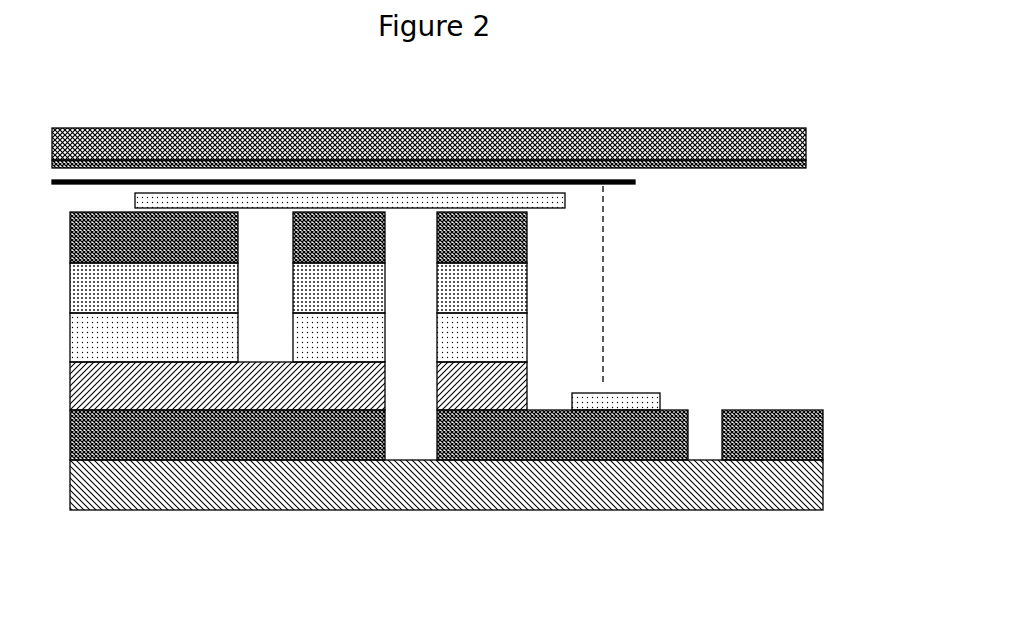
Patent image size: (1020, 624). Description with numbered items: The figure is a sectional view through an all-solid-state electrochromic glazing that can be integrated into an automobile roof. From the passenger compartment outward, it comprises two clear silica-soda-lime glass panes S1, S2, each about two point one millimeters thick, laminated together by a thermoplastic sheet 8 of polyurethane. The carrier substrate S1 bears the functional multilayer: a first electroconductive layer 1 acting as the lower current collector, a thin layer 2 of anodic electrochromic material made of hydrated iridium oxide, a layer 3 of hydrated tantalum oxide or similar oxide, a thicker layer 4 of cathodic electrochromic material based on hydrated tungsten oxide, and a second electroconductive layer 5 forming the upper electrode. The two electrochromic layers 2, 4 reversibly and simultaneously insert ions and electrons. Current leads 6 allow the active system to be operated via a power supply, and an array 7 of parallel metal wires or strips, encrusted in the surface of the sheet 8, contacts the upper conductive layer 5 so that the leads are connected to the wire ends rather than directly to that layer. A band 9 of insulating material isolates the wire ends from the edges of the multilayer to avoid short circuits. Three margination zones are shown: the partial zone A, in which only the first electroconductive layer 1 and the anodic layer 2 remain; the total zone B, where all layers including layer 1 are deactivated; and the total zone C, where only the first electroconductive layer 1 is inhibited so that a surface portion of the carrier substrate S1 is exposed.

The first electroconductive layer 1 is at (811, 418).
The layer of anodic electrochromic material 2 is at (530, 377).
The layer of hydrated tantalum oxide 3 is at (530, 344).
The layer of cathodic electrochromic material 4 is at (508, 295).
The second electroconductive layer 5 is at (530, 245).
The current leads 6 is at (620, 398).
The array of electrically conducting wires or strips 7 is at (590, 175).
The thermoplastic sheet 8 is at (115, 154).
The band of insulating material 9 is at (565, 195).
The glass pane S1 is at (183, 497).
The glass pane S2 is at (163, 124).
The first margination zone A is at (271, 333).
The second margination zone B is at (419, 415).
The third margination zone C is at (706, 446).